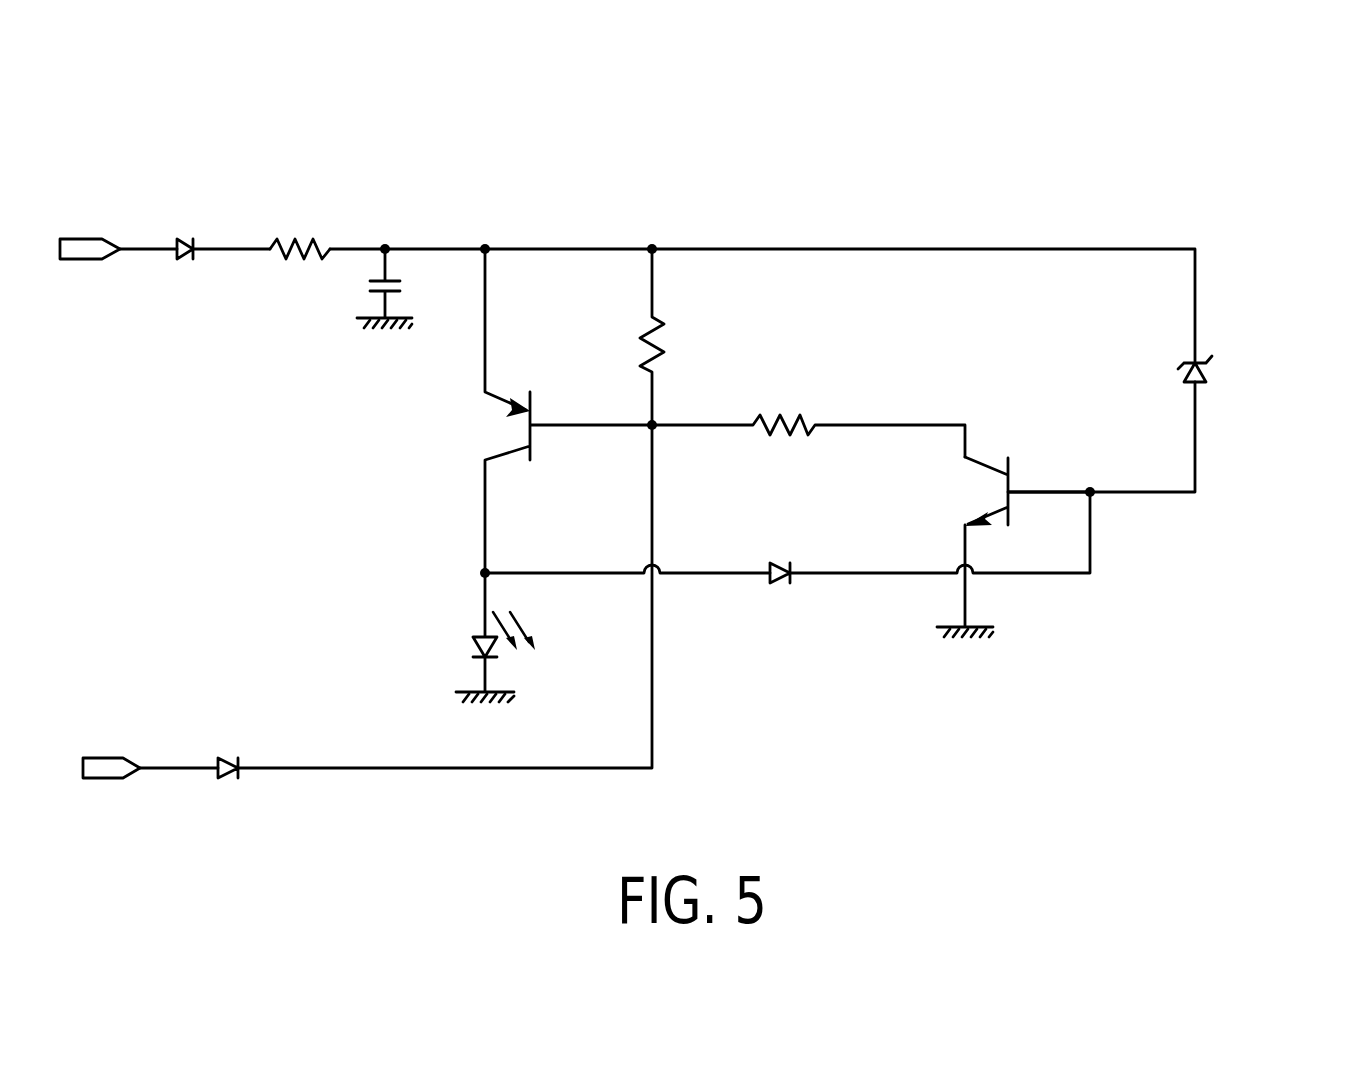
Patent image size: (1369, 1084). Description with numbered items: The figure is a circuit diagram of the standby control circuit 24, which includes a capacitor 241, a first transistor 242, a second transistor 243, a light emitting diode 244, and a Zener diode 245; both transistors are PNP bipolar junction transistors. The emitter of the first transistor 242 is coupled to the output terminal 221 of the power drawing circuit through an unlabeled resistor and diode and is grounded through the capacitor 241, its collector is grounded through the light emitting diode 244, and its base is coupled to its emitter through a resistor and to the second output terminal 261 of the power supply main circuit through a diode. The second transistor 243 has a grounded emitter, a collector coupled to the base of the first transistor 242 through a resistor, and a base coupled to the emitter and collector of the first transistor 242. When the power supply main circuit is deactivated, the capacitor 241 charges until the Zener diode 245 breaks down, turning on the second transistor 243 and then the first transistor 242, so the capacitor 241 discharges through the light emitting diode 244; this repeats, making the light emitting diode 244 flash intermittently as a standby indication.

The standby control circuit 24 is at (573, 190).
The output terminal 221 is at (82, 259).
The capacitor 241 is at (370, 283).
The first transistor 242 is at (538, 413).
The second transistor 243 is at (993, 493).
The light emitting diode 244 is at (473, 655).
The Zener diode 245 is at (1210, 373).
The second output terminal 261 is at (110, 778).